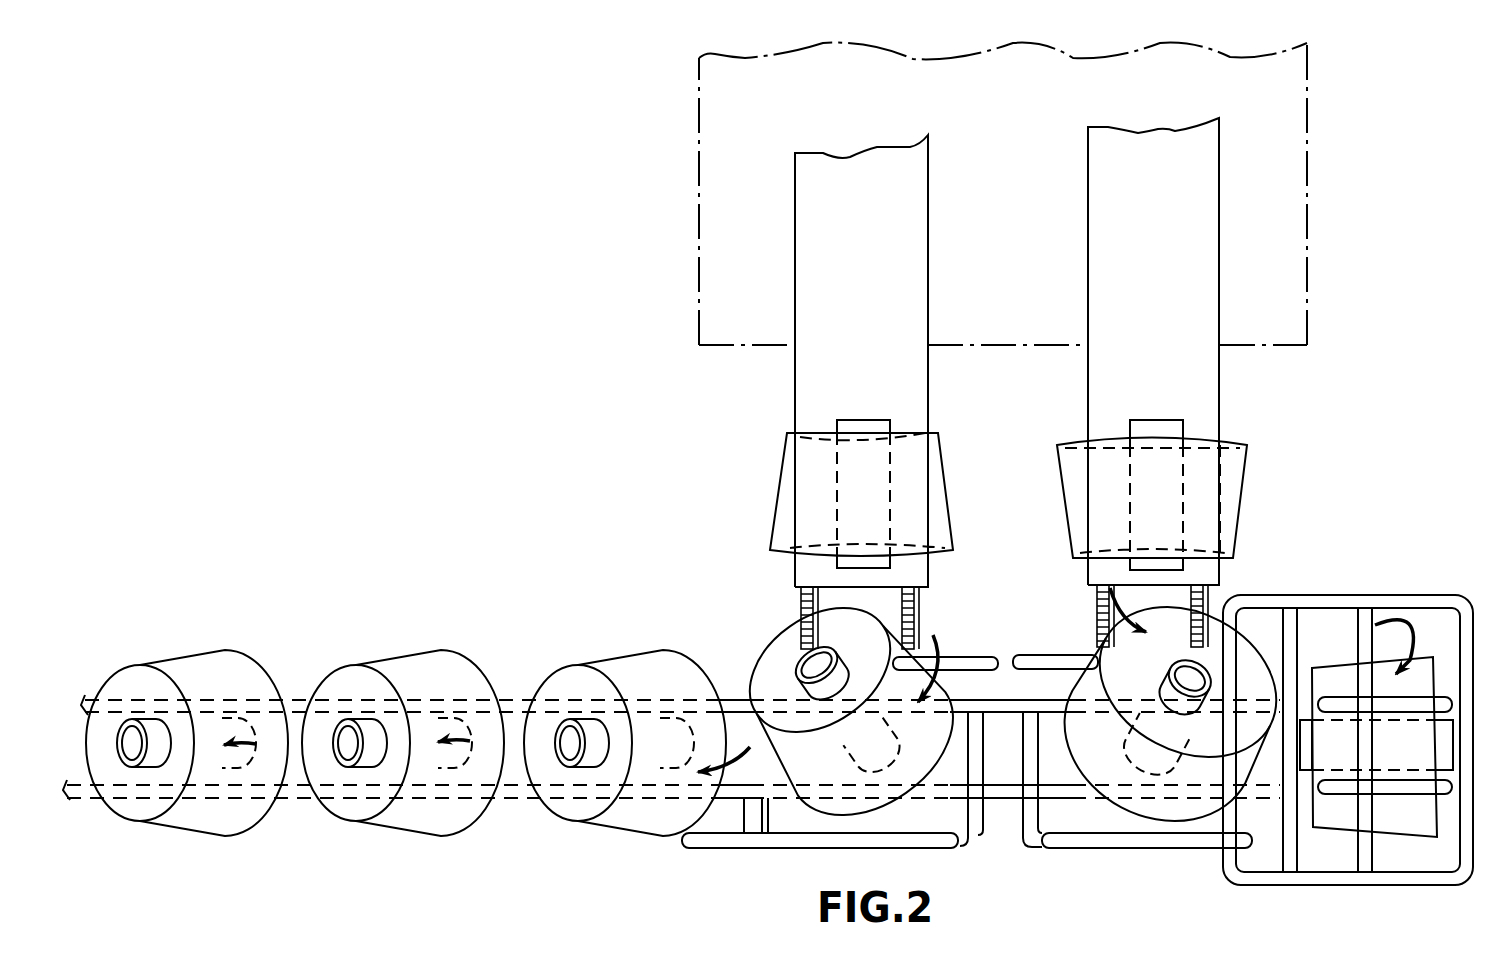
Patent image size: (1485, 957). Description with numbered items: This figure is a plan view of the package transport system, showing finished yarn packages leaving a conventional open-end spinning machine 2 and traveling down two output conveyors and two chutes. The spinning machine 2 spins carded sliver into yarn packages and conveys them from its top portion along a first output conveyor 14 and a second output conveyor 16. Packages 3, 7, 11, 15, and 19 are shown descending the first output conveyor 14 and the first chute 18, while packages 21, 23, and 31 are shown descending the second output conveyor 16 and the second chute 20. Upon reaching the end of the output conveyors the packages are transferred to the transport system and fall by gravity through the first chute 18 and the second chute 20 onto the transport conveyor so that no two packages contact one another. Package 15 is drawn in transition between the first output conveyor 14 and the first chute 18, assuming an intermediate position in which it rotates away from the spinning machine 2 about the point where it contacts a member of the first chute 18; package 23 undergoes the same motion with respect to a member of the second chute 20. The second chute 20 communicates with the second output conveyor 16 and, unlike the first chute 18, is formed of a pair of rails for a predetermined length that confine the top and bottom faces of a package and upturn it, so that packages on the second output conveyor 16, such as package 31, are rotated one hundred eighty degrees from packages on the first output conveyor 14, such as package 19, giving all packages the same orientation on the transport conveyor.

The open-end spinning machine 2 is at (720, 150).
The package 3 is at (225, 665).
The package 7 is at (445, 665).
The package 11 is at (630, 665).
The first output conveyor 14 is at (817, 272).
The package 15 is at (777, 655).
The second output conveyor 16 is at (1182, 300).
The first chute 18 is at (606, 849).
The package 19 is at (815, 495).
The second chute 20 is at (1132, 862).
The package 21 is at (1418, 670).
The package 23 is at (1180, 646).
The package 31 is at (1205, 465).